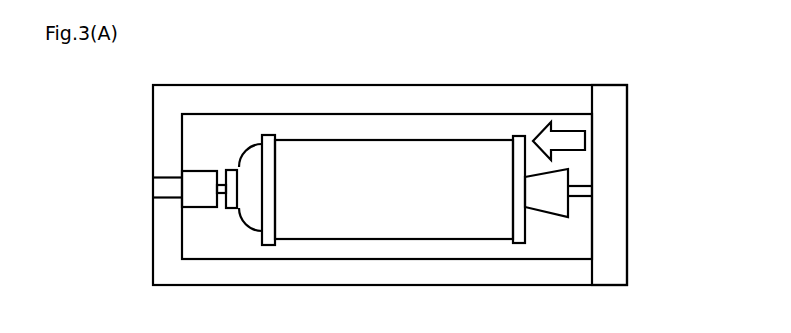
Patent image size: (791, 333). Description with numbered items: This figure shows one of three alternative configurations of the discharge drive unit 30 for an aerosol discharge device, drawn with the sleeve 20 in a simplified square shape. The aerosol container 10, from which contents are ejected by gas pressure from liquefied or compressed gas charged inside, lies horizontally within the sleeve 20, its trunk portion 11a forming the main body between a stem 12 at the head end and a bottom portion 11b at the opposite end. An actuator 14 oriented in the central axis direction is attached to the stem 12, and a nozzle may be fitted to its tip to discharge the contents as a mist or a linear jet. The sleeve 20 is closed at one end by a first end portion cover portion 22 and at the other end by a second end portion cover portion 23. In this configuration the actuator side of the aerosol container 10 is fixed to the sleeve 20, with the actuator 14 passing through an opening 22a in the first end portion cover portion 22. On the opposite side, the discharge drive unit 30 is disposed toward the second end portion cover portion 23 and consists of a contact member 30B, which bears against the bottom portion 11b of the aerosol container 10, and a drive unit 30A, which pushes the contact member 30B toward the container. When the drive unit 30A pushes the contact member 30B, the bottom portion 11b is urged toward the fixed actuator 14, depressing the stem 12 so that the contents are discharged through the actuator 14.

The aerosol container 10 is at (382, 183).
The trunk portion 11a is at (367, 237).
The bottom portion 11b is at (523, 247).
The stem 12 is at (222, 198).
The actuator 14 is at (195, 209).
The sleeve 20 is at (384, 161).
The first end portion cover portion 22 is at (356, 182).
The opening in housing wall 22a is at (166, 178).
The second end portion cover portion 23 is at (623, 172).
The discharge drive unit 30 is at (602, 250).
The drive unit 30A is at (575, 198).
The contact member 30B is at (553, 213).